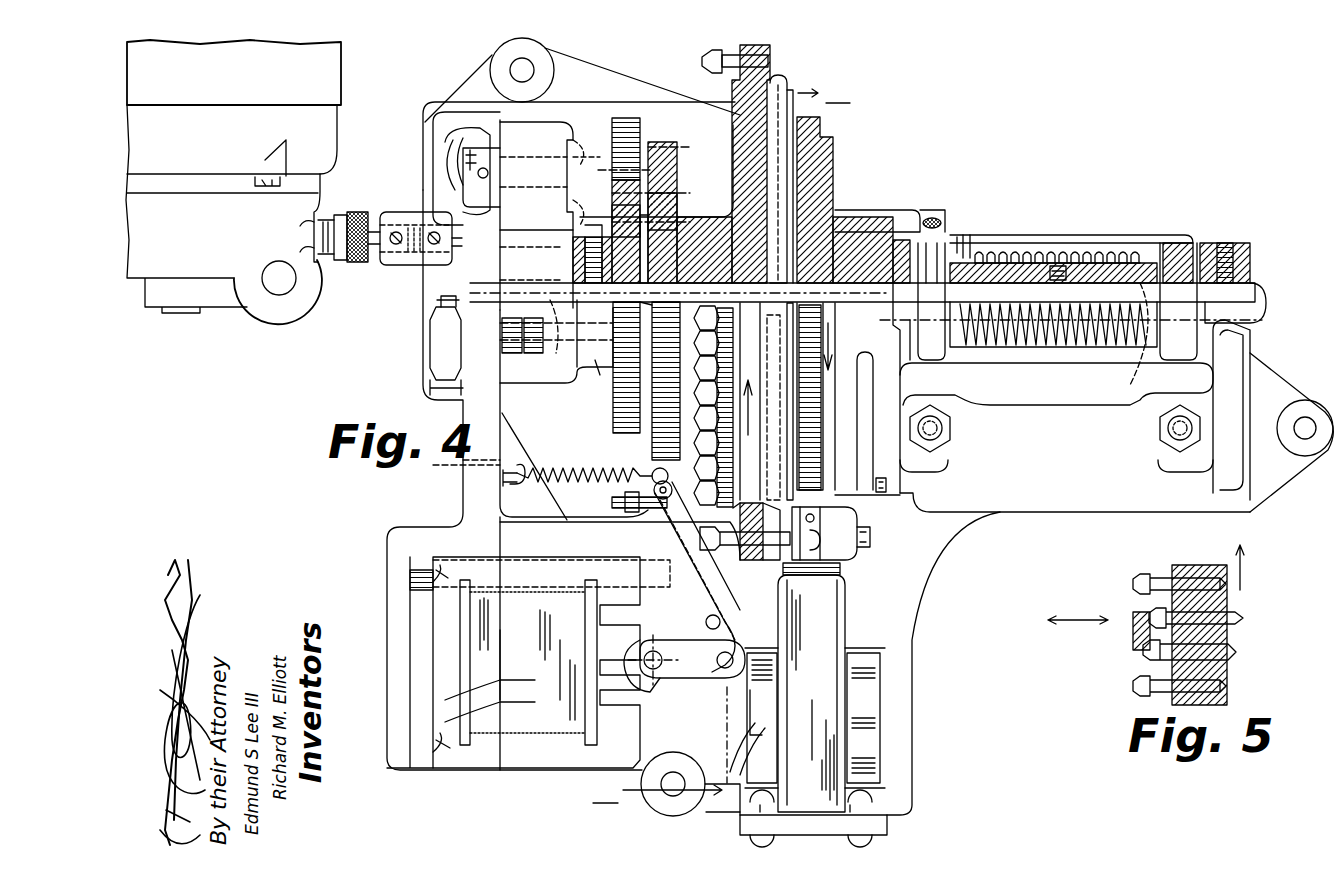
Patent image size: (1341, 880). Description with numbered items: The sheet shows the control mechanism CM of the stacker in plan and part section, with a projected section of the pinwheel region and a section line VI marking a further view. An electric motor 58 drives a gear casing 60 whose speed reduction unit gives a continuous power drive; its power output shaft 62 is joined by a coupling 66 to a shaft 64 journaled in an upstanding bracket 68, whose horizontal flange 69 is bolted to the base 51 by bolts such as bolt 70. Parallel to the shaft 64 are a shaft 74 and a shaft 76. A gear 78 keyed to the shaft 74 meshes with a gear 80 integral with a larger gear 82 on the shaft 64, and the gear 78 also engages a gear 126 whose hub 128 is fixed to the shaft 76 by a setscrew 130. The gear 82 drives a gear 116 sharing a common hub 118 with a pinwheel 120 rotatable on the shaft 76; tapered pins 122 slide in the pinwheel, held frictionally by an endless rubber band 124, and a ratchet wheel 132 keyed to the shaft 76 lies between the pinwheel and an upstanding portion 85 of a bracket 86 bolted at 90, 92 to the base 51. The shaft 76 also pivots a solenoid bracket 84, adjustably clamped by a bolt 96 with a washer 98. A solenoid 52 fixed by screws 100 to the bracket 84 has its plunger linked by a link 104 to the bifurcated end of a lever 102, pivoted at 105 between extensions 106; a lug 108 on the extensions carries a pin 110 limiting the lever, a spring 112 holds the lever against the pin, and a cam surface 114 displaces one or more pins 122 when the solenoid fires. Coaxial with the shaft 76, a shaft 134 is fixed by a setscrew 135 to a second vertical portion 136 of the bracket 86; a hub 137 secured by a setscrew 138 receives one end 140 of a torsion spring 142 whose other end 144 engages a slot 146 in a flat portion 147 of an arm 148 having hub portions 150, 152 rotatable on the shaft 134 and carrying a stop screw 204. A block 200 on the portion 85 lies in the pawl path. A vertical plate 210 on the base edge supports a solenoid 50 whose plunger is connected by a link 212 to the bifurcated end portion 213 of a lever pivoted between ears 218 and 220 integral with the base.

In FIG. 4, the solenoid 50 is at (862, 695).
In FIG. 4, the base 51 is at (913, 610).
In FIG. 4, the solenoid 52 is at (530, 755).
In FIG. 4, the electric motor 58 is at (332, 77).
In FIG. 4, the gear casing 60 is at (312, 282).
In FIG. 4, the power output shaft 62 is at (378, 214).
In FIG. 4, the shaft 64 is at (455, 252).
In FIG. 4, the coupling 66 is at (410, 212).
In FIG. 4, the upstanding bracket 68 is at (530, 132).
In FIG. 4, the horizontal flange 69 is at (440, 128).
In FIG. 4, the bolt 70 is at (452, 157).
In FIG. 4, the shaft 74 is at (570, 152).
In FIG. 4, the shaft 76 is at (539, 304).
In FIG. 4, the gear 78 is at (628, 135).
In FIG. 4, the gear 80 is at (665, 196).
In FIG. 4, the gear 82 is at (660, 218).
In FIG. 4, the solenoid bracket 84 is at (467, 488).
In FIG. 4, the upstanding portion 85 is at (880, 468).
In FIG. 4, the bracket 86 is at (1030, 495).
In FIG. 4, the bolt 90 is at (942, 428).
In FIG. 4, the bolt 92 is at (1168, 437).
In FIG. 4, the bolt 96 is at (430, 340).
In FIG. 4, the washer 98 is at (430, 388).
In FIG. 4, the screws 100 is at (445, 574).
In FIG. 4, the lever 102 is at (698, 583).
In FIG. 4, the link 104 is at (695, 672).
In FIG. 4, the pivot 105 is at (720, 622).
In FIG. 4, the extensions 106 is at (727, 612).
In FIG. 4, the lug 108 is at (612, 500).
In FIG. 4, the pin 110 is at (565, 512).
In FIG. 4, the spring 112 is at (580, 470).
In FIG. 4, the cam surface 114 is at (710, 530).
In FIG. 5, the cam surface 114 is at (1136, 618).
In FIG. 4, the gear 116 is at (652, 447).
In FIG. 4, the hub 118 is at (710, 392).
In FIG. 4, the pinwheel 120 is at (738, 98).
In FIG. 5, the pinwheel 120 is at (1205, 570).
In FIG. 4, the pins 122 is at (704, 60).
In FIG. 5, the pins 122 is at (1158, 578).
In FIG. 4, the endless resilient rubber band 124 is at (795, 60).
In FIG. 4, the gear 126 is at (618, 410).
In FIG. 4, the hub 128 is at (576, 349).
In FIG. 4, the setscrew 130 is at (580, 247).
In FIG. 4, the ratchet wheel 132 is at (838, 195).
In FIG. 4, the shaft 134 is at (1255, 286).
In FIG. 4, the setscrew 135 is at (1240, 245).
In FIG. 4, the second vertical portion 136 is at (1238, 360).
In FIG. 4, the hub 137 is at (1197, 245).
In FIG. 4, the setscrew 138 is at (1075, 265).
In FIG. 4, the end of torsion spring 140 is at (1130, 382).
In FIG. 4, the torsion spring 142 is at (1150, 250).
In FIG. 4, the end of torsion spring 144 is at (975, 240).
In FIG. 4, the slot 146 is at (985, 250).
In FIG. 4, the flat portion 147 is at (1062, 266).
In FIG. 4, the arm 148 is at (875, 215).
In FIG. 4, the hub portion 150 is at (936, 365).
In FIG. 4, the hub portion 152 is at (1175, 366).
In FIG. 4, the block 200 is at (888, 500).
In FIG. 4, the adjustable stop screw 204 is at (940, 217).
In FIG. 4, the vertical plate 210 is at (880, 828).
In FIG. 4, the link 212 is at (840, 567).
In FIG. 4, the bifurcated end portion 213 is at (830, 524).
In FIG. 4, the ear 218 is at (785, 590).
In FIG. 4, the ear 220 is at (866, 540).
In FIG. 4, the control mechanism CM is at (1000, 202).
In FIG. 4, the section line VI is at (721, 442).